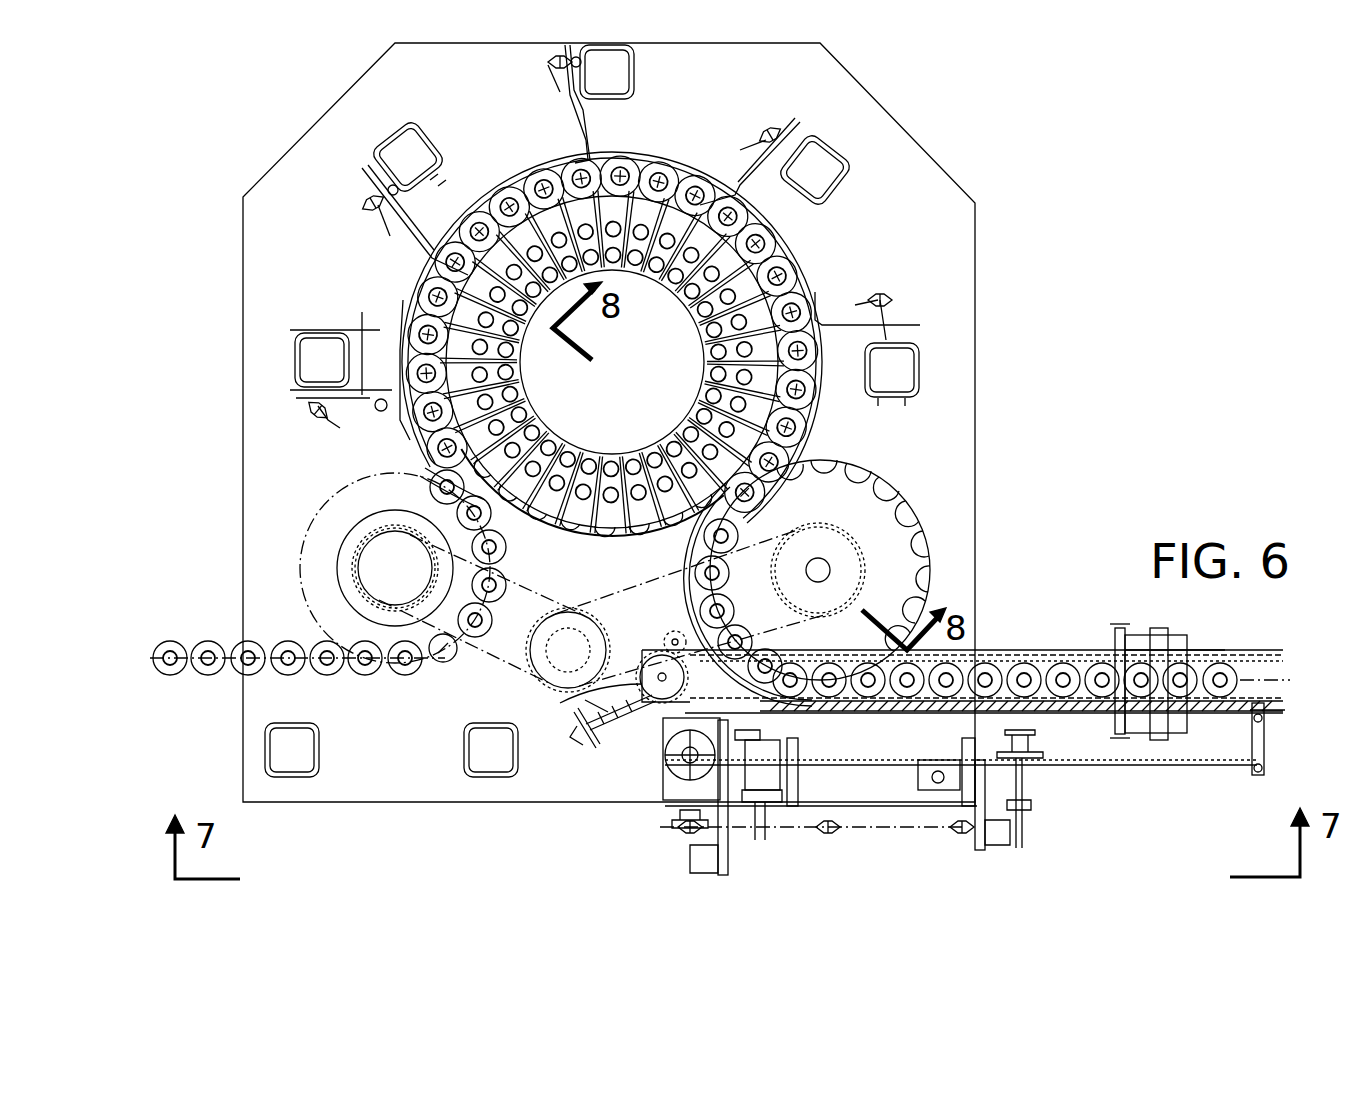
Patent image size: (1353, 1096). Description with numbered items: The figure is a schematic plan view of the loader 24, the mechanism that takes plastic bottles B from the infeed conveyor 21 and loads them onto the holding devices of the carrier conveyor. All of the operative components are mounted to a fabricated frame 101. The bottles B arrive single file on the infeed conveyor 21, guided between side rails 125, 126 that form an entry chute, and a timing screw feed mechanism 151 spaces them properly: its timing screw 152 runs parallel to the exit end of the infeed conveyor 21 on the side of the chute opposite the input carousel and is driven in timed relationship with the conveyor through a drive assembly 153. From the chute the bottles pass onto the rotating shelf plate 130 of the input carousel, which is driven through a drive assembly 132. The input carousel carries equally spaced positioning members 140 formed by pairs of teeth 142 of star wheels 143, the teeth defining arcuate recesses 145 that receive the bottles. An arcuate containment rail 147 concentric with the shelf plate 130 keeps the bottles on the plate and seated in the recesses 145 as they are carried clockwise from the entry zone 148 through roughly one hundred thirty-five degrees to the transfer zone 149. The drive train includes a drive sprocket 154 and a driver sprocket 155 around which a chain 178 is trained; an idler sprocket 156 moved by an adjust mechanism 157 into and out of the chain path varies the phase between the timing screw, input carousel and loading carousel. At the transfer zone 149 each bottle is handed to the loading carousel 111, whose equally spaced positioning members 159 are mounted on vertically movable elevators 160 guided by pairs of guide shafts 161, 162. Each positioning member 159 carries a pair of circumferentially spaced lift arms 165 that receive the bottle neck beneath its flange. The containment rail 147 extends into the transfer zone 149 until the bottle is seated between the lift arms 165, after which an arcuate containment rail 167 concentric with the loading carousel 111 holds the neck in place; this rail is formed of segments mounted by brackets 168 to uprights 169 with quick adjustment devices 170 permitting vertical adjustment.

The infeed conveyor 21 is at (1272, 652).
The loader 24 is at (961, 160).
The frame 101 is at (975, 358).
The loading carousel 111 is at (635, 338).
The side rail 125 is at (1240, 650).
The side rail 126 is at (1275, 712).
The shelf plate 130 is at (922, 540).
The drive assembly 132 is at (494, 663).
The positioning members 140 is at (842, 552).
The teeth 142 is at (855, 478).
The star wheels 143 is at (905, 580).
The arcuate recesses 145 is at (900, 520).
The containment rail 147 is at (693, 550).
The entry zone 148 is at (798, 644).
The transfer zone 149 is at (743, 530).
The timing screw feed mechanism 151 is at (662, 755).
The timing screw 152 is at (1043, 697).
The drive assembly 153 is at (666, 835).
The drive sprocket 154 is at (524, 668).
The driver sprocket 155 is at (788, 552).
The idler sprocket 156 is at (586, 710).
The adjust mechanism 157 is at (590, 753).
The positioning members 159 is at (670, 165).
The elevators 160 is at (700, 358).
The guide shaft 161 is at (585, 470).
The guide shaft 162 is at (603, 466).
The lift arms 165 is at (613, 540).
The containment rail 167 is at (783, 240).
The brackets 168 is at (365, 176).
The uprights 169 is at (387, 150).
The quick adjustment devices 170 is at (368, 208).
The chain 178 is at (648, 636).
The bottles B is at (327, 676).